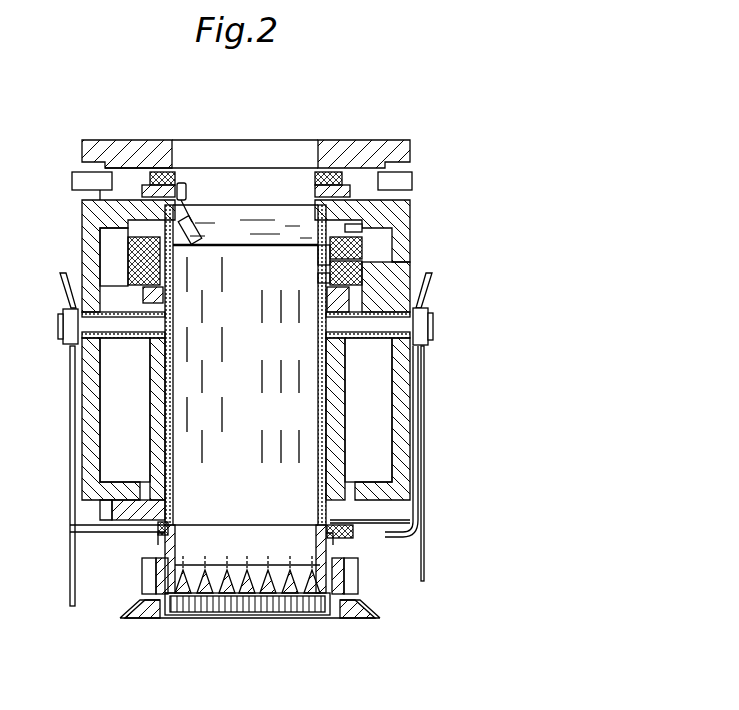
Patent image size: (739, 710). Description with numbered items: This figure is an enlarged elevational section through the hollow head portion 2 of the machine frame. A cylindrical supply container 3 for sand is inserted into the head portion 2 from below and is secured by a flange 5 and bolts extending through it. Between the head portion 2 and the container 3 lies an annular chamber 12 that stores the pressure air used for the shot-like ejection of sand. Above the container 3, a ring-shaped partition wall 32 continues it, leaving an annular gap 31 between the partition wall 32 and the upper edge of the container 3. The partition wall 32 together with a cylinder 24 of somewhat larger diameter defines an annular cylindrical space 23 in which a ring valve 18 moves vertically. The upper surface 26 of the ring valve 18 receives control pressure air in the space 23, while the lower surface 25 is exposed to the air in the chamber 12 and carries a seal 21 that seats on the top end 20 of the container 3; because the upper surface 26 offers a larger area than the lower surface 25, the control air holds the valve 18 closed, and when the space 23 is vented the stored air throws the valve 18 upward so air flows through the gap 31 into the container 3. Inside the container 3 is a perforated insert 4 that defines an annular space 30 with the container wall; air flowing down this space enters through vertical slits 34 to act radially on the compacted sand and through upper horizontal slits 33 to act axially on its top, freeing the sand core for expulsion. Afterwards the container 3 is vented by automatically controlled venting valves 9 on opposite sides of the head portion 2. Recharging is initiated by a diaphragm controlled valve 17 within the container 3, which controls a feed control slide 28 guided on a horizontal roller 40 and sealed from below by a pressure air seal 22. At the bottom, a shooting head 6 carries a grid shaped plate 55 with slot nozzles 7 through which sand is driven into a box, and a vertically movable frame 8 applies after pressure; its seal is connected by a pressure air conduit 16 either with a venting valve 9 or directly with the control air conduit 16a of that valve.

The head portion 2 is at (403, 425).
The supply container 3 is at (322, 482).
The perforated insert 4 is at (163, 440).
The flange 5 is at (118, 512).
The shooting head 6 is at (338, 537).
The slot nozzles 7 is at (208, 618).
The vertically movable frame 8 is at (352, 562).
The venting valves 9 is at (428, 338).
The annular chamber 12 is at (383, 382).
The pressure air conduit 16 is at (120, 535).
The control air conduit 16a is at (70, 548).
The diaphragm controlled valve 17 is at (193, 217).
The ring valve 18 is at (357, 266).
The top end 20 is at (141, 297).
The seal 21 is at (162, 288).
The pressure air seal 22 is at (332, 200).
The annular cylindrical space 23 is at (356, 230).
The cylinder 24 is at (382, 270).
The lower surface 25 is at (135, 285).
The upper surface 26 is at (362, 256).
The feed control slide 28 is at (218, 166).
The annular space 30 is at (163, 378).
The annular gap 31 is at (318, 278).
The partition wall 32 is at (327, 253).
The horizontal slits 33 is at (305, 203).
The vertical slits 34 is at (202, 448).
The roller 40 is at (405, 178).
The grid shaped plate 55 is at (290, 616).